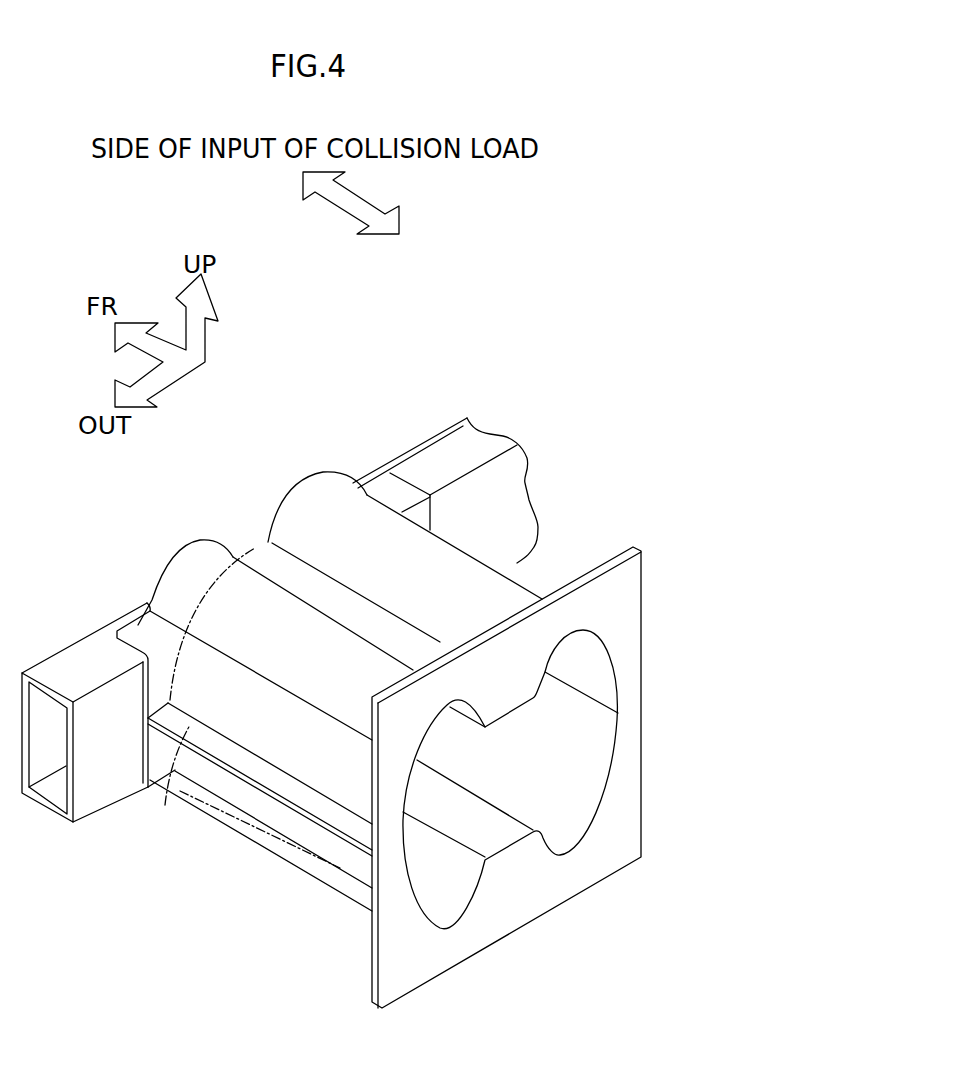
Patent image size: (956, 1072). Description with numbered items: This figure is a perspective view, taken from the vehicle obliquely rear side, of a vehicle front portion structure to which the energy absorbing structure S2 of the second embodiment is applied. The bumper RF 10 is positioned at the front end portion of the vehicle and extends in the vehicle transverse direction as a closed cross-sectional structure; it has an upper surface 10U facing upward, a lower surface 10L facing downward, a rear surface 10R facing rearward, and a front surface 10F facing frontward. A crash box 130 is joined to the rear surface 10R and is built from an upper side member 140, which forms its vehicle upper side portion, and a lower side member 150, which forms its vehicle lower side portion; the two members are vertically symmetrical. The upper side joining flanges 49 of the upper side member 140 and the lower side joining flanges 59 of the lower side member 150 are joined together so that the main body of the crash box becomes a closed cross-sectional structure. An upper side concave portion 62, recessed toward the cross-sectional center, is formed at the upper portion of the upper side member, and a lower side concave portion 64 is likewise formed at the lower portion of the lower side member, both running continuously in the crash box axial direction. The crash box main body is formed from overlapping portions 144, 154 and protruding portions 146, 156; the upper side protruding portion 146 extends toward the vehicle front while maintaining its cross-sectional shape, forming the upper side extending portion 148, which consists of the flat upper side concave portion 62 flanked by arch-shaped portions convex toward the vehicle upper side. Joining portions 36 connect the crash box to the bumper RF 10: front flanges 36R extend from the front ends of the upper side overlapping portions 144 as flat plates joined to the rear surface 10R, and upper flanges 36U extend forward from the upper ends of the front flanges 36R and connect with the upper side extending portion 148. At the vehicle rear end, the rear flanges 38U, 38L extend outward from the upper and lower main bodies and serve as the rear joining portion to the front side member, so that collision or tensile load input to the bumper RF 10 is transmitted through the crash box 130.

The vehicle body structure S2 is at (664, 322).
The bumper RF 10 is at (452, 412).
The front surface 10F is at (412, 446).
The upper surface 10U is at (474, 438).
The rear surface 10R is at (527, 498).
The lower surface 10L is at (522, 562).
The joining portions 36 is at (103, 618).
The upper flange 36U is at (411, 489).
The front flange 36R is at (421, 512).
The crash box 130 is at (547, 736).
The upper side member 140 is at (647, 588).
The rear flange 38U is at (634, 663).
The rear flange 38L is at (638, 830).
The upper side extending portion 148 is at (193, 556).
The upper side protruding portion 146 is at (390, 574).
The upper side overlapping portion 144 is at (230, 697).
The lower side overlapping portion 154 is at (248, 795).
The lower side protruding portion 156 is at (323, 876).
The upper side concave portion 62 is at (421, 640).
The lower side concave portion 64 is at (462, 805).
The upper side joining flange 49 is at (264, 772).
The lower side joining flange 59 is at (295, 815).
The lower side member 150 is at (368, 979).